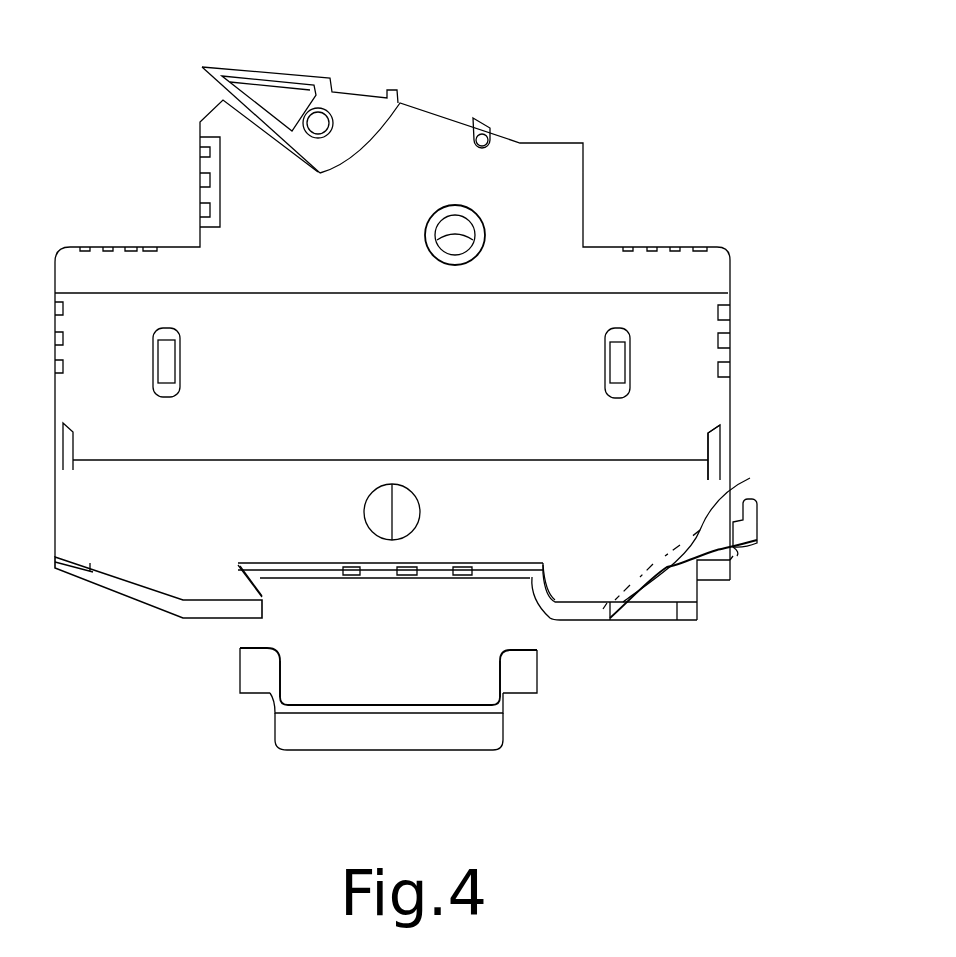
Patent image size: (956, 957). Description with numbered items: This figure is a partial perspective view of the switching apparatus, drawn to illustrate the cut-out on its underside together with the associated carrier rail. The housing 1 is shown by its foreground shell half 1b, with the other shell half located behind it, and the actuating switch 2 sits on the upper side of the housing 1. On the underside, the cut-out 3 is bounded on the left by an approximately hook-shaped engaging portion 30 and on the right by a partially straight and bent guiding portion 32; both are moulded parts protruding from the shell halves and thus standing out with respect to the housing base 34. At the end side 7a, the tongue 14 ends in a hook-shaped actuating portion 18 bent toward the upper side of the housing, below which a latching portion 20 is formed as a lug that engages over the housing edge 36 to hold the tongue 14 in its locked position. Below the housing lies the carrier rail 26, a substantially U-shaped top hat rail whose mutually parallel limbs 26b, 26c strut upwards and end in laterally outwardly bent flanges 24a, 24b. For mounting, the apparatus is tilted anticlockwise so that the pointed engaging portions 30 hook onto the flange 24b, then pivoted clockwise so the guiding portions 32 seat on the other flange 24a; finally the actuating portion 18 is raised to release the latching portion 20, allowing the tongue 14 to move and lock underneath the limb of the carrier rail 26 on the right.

The housing 1 is at (672, 233).
The shell half 1b is at (493, 521).
The actuating switch 2 is at (258, 68).
The cut-out 3 is at (404, 613).
The end side 7a is at (740, 467).
The tongue 14 is at (750, 478).
The actuating portion 18 is at (753, 517).
The latching portion 20 is at (737, 548).
The flange 24a is at (527, 655).
The flange 24b is at (243, 657).
The carrier rail 26 is at (390, 735).
The limb 26b is at (280, 680).
The limb 26c is at (500, 683).
The engaging portion 30 is at (266, 585).
The guiding portion 32 is at (524, 582).
The housing base 34 is at (158, 603).
The housing edge 36 is at (735, 557).